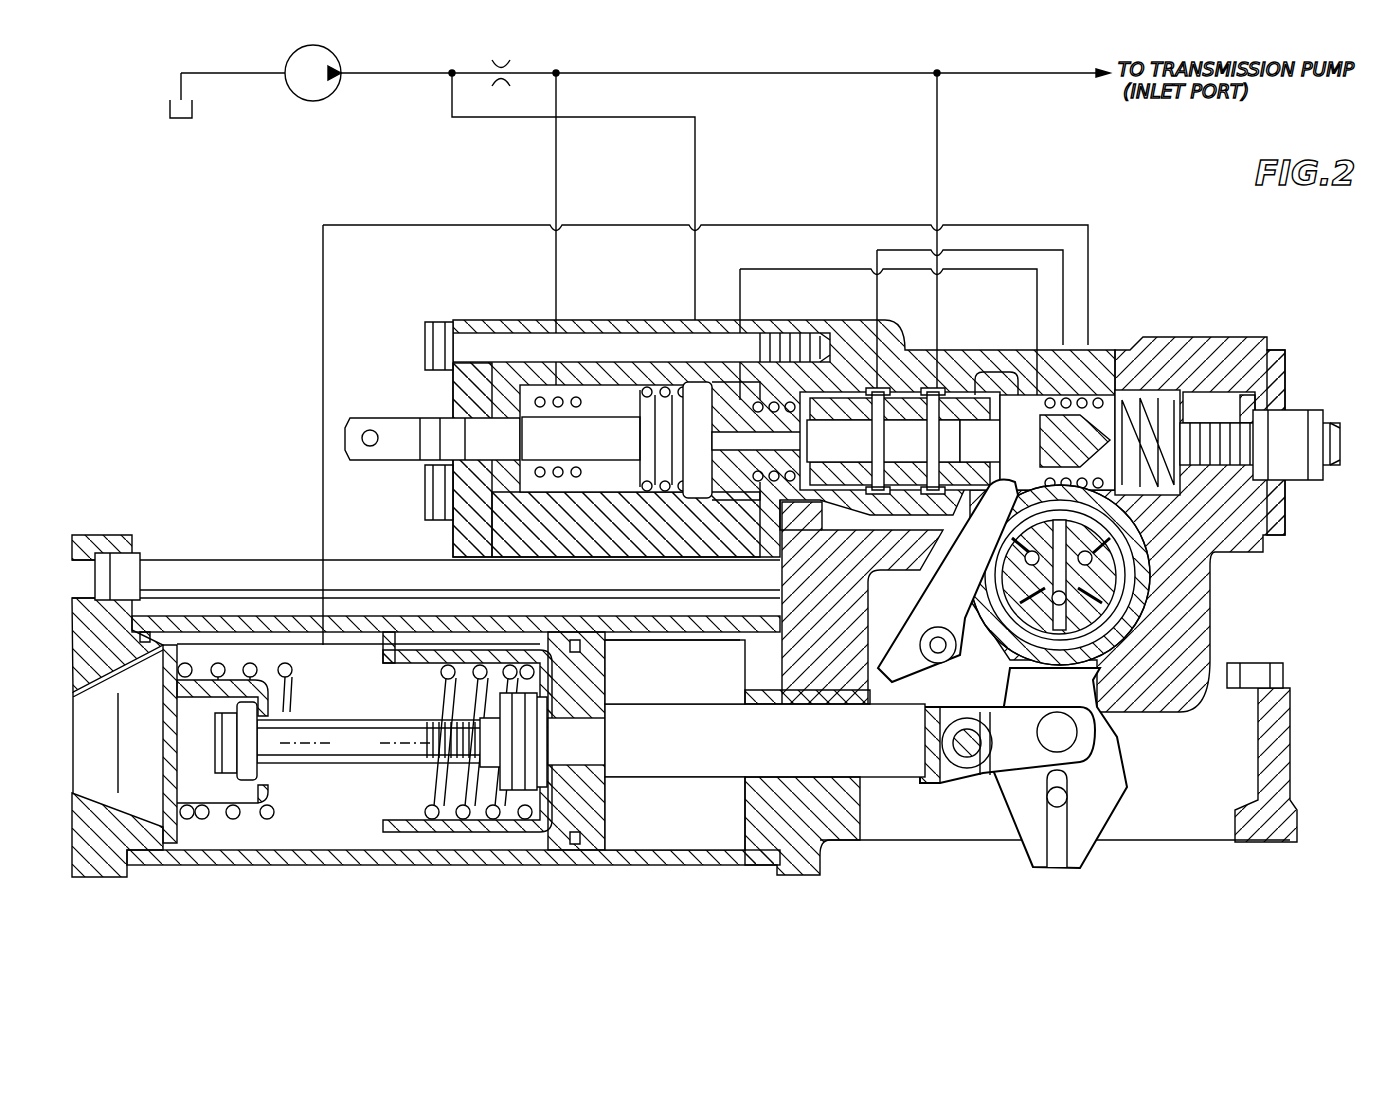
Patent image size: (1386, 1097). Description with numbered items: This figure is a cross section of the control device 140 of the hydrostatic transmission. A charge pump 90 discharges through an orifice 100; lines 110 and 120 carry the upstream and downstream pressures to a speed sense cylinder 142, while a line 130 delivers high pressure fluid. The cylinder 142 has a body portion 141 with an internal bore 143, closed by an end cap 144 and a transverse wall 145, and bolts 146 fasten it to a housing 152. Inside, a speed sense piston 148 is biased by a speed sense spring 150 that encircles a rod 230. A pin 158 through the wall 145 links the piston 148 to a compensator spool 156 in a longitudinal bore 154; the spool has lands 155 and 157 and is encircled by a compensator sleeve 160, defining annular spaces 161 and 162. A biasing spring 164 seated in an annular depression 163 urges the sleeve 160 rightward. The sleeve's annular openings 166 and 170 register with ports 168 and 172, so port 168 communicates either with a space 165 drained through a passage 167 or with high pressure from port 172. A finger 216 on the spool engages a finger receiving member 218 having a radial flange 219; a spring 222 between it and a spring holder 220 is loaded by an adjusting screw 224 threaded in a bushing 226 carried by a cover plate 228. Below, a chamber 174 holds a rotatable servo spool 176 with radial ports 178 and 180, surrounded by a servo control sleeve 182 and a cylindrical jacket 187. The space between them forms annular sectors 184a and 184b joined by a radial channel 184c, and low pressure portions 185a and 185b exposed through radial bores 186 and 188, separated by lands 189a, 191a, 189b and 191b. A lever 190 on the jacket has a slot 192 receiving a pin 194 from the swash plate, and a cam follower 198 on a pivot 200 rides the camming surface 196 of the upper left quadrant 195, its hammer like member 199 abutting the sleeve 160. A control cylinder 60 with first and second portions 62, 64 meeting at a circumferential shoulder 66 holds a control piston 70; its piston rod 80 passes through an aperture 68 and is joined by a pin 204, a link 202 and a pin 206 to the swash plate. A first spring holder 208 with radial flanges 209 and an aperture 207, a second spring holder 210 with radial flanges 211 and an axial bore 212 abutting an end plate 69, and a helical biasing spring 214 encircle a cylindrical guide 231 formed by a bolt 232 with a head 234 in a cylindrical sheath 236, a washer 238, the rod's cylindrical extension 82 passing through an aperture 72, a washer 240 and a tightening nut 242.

The control cylinder 60 is at (700, 865).
The first portion 62 is at (318, 865).
The second portion 64 is at (510, 865).
The circumferential shoulder 66 is at (392, 865).
The longitudinal aperture 68 is at (778, 760).
The end plate 69 is at (118, 877).
The control piston 70 is at (592, 865).
The longitudinal aperture 72 is at (590, 765).
The control piston rod 80 is at (668, 785).
The cylindrical extension 82 is at (605, 692).
The charge pump 90 is at (338, 90).
The orifice 100 is at (506, 63).
The line 110 is at (680, 117).
The line 120 is at (556, 170).
The line 130 is at (937, 130).
The control device 140 is at (1130, 296).
The body portion 141 is at (655, 560).
The speed sense cylinder 142 is at (636, 318).
The internal bore 143 is at (578, 492).
The end cap 144 is at (453, 547).
The transverse wall 145 is at (720, 330).
The bolts 146 is at (490, 326).
The speed sense piston 148 is at (612, 492).
The speed sense spring 150 is at (555, 493).
The housing 152 is at (1235, 337).
The longitudinal bore 154 is at (1045, 400).
The cylindrical land 155 is at (1000, 395).
The compensator spool 156 is at (940, 448).
The cylindrical land 157 is at (880, 485).
The pin 158 is at (712, 470).
The compensator sleeve 160 is at (800, 580).
The compensator annular space 161 is at (825, 530).
The compensator annular space 162 is at (880, 530).
The annular depression 163 is at (772, 400).
The biasing spring 164 is at (780, 530).
The space 165 is at (790, 350).
The annular opening 166 is at (853, 388).
The passage 167 is at (740, 540).
The port 168 is at (878, 390).
The annular opening 170 is at (975, 378).
The port 172 is at (945, 395).
The chamber 174 is at (1262, 775).
The servo spool 176 is at (1090, 650).
The radial port 178 is at (1120, 600).
The radial port 180 is at (1059, 540).
The servo control sleeve 182 is at (1025, 650).
The annular sector 184a is at (1098, 545).
The annular sector 184b is at (1080, 655).
The radial channel 184c is at (1112, 560).
The partitioned portion 185a is at (990, 580).
The partitioned portion 185b is at (1125, 590).
The radial bore 186 is at (975, 560).
The cylindrical jacket 187 is at (1038, 660).
The radial bore 188 is at (1135, 600).
The land 189a is at (878, 570).
The land 189b is at (1140, 625).
The lever 190 is at (1090, 830).
The land 191a is at (1020, 650).
The land 191b is at (1110, 585).
The slot 192 is at (1052, 850).
The pin 194 is at (1067, 797).
The upper left quadrant 195 is at (955, 530).
The camming surface 196 is at (933, 495).
The cam follower 198 is at (880, 647).
The hammer like member 199 is at (1018, 463).
The pivot 200 is at (940, 662).
The link 202 is at (1042, 755).
The pin 204 is at (920, 748).
The pin 206 is at (1077, 735).
The longitudinal aperture 207 is at (572, 652).
The first spring holder 208 is at (445, 832).
The radial flanges 209 is at (395, 625).
The second spring holder 210 is at (262, 845).
The radial flanges 211 is at (188, 845).
The axial bore 212 is at (293, 712).
The helical biasing spring 214 is at (436, 805).
The finger 216 is at (1060, 400).
The finger receiving member 218 is at (1085, 400).
The radial flange 219 is at (1070, 400).
The spring holder 220 is at (1140, 395).
The spring 222 is at (1190, 423).
The adjusting screw 224 is at (1235, 465).
The bushing 226 is at (1300, 480).
The cover plate 228 is at (1287, 372).
The rod 230 is at (372, 418).
The cylindrical guide 231 is at (370, 822).
The bolt 232 is at (340, 755).
The head 234 is at (215, 745).
The cylindrical sheath 236 is at (385, 718).
The washer 238 is at (258, 780).
The washer 240 is at (605, 660).
The tightening nut 242 is at (460, 690).